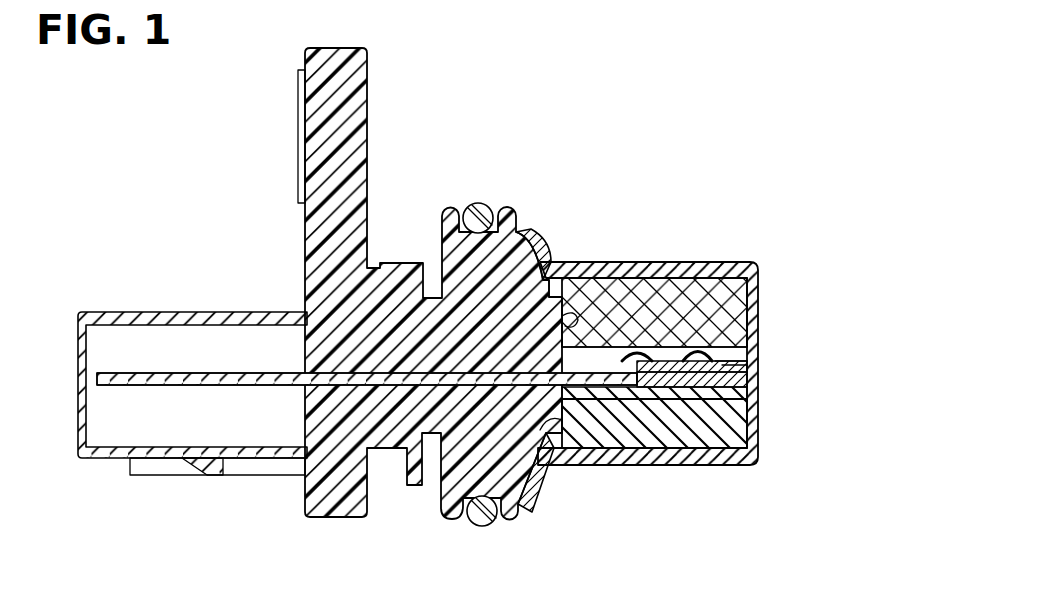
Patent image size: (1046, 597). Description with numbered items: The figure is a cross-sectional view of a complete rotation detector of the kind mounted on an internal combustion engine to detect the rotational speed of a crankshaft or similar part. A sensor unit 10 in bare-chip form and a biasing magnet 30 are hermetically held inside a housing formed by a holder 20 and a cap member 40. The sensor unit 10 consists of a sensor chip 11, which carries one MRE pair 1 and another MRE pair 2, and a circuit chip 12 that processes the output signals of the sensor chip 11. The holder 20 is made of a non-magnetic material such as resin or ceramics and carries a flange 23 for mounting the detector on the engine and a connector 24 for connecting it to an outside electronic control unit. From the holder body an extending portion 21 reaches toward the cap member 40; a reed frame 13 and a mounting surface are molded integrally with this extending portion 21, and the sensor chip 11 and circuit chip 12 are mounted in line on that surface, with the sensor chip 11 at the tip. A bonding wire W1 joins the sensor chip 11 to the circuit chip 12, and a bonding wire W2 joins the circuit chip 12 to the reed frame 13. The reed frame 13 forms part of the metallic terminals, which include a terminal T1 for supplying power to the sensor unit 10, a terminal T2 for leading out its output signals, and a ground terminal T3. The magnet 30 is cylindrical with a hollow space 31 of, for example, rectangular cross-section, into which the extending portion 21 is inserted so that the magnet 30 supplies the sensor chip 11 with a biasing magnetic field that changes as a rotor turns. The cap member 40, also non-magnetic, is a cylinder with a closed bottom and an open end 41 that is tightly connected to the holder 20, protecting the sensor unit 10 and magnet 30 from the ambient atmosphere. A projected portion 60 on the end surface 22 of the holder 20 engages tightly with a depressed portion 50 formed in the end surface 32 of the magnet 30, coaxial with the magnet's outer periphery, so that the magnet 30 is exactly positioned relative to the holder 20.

The MRE pair 1 is at (774, 337).
The MRE pair 2 is at (745, 353).
The sensor unit 10 is at (756, 375).
The sensor chip 11 is at (742, 367).
The circuit chip 12 is at (742, 381).
The reed frame 13 is at (626, 448).
The holder 20 is at (442, 476).
The extending portion 21 is at (691, 460).
The end surface 22 is at (557, 282).
The flange 23 is at (305, 70).
The connector 24 is at (98, 312).
The magnet 30 is at (735, 427).
The hollow space 31 is at (594, 349).
The end surface 32 is at (522, 472).
The cap member 40 is at (628, 262).
The open end 41 is at (541, 248).
The depressed portion 50 is at (550, 456).
The projected portion 60 is at (560, 316).
The bonding wire W1 is at (700, 350).
The bonding wire W2 is at (645, 352).
The terminal T1 is at (364, 446).
The terminal T2 is at (364, 446).
The ground terminal T3 is at (105, 388).